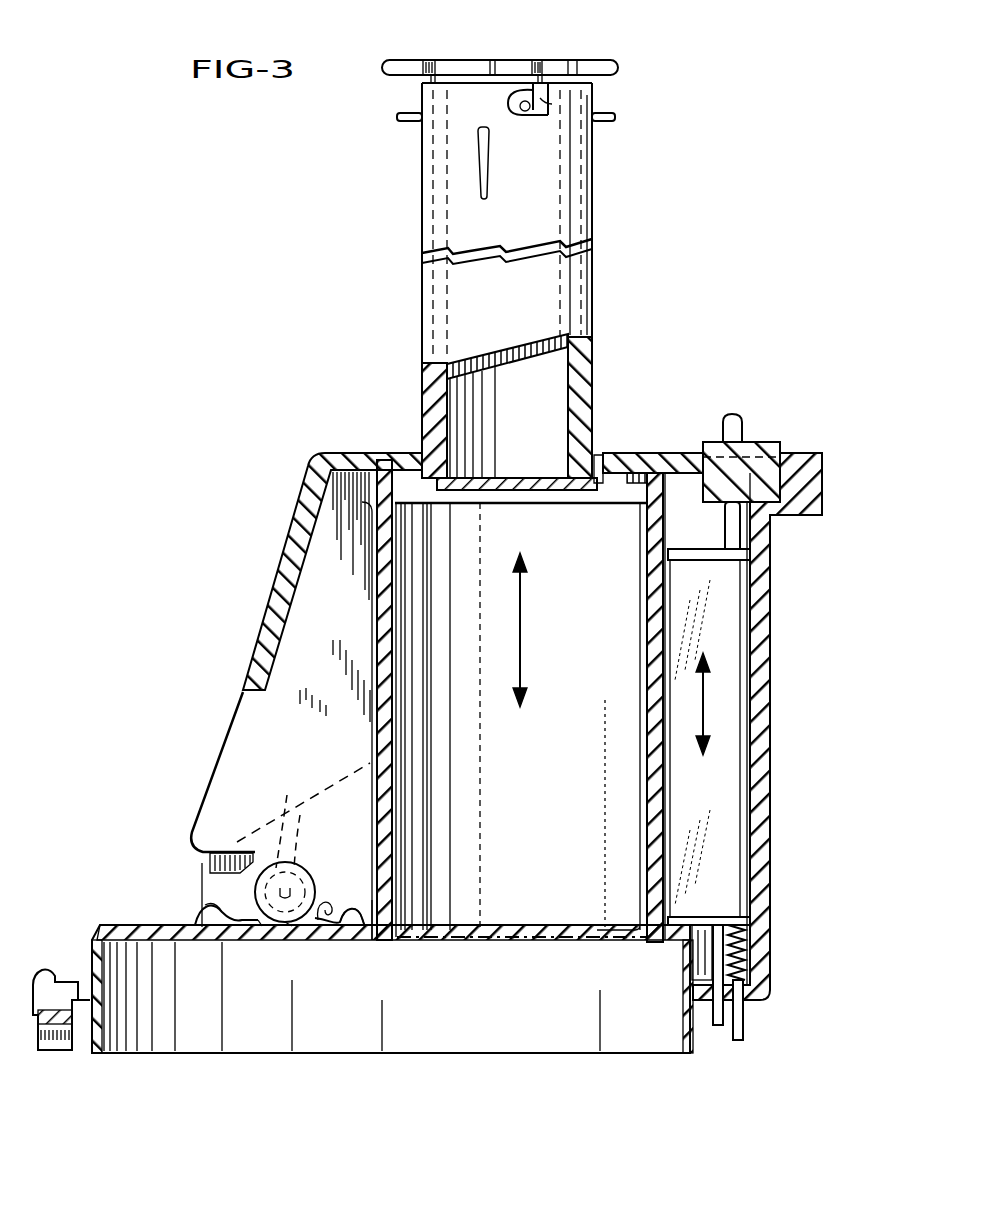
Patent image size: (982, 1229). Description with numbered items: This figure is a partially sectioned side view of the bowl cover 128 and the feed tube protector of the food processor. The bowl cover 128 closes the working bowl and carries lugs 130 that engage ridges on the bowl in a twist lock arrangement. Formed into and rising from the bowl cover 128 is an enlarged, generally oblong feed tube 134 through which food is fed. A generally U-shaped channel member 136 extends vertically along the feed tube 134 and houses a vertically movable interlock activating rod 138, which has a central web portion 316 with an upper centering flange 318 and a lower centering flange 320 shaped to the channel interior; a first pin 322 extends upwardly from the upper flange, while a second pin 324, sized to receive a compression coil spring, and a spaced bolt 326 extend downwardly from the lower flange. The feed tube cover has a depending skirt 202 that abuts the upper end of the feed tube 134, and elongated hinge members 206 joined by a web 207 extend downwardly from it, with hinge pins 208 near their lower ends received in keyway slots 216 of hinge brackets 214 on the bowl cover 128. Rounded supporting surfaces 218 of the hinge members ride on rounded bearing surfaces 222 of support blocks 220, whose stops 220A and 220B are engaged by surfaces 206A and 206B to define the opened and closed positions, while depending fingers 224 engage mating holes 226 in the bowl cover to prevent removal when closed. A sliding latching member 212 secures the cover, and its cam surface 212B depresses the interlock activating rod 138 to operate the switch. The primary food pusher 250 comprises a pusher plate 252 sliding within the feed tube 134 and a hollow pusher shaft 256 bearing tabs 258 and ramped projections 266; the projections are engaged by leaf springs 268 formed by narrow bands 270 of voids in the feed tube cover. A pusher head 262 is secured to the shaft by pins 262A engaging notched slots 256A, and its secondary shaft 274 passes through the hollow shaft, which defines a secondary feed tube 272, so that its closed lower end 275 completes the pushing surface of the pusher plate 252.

The bowl cover 128 is at (127, 925).
The lugs 130 is at (45, 975).
The feed tube 134 is at (547, 757).
The channel member 136 is at (769, 800).
The interlock activating rod 138 is at (754, 718).
The depending skirt 202 is at (373, 503).
The elongated hinge members 206 is at (240, 722).
The surface of hinge member 206A is at (232, 853).
The surface of hinge member 206B is at (322, 905).
The web 207 is at (296, 545).
The hinge pins 208 is at (290, 862).
The latching member 212 is at (753, 437).
The cam surface 212B is at (780, 520).
The hinge brackets 214 is at (208, 868).
The keyway slots 216 is at (287, 805).
The rounded supporting surfaces 218 is at (292, 943).
The feed tube cover support blocks 220 is at (221, 950).
The stop 220A is at (232, 907).
The stop 220B is at (372, 904).
The rounded bearing surfaces 222 is at (265, 942).
The depending fingers 224 is at (376, 945).
The mating holes 226 is at (372, 900).
The primary food pusher 250 is at (403, 282).
The pusher plate 252 is at (607, 505).
The pusher shaft 256 is at (595, 248).
The notched slots 256A is at (538, 118).
The tabs 258 is at (403, 122).
The pusher head 262 is at (597, 60).
The pins 262A is at (528, 115).
The ramped projections 266 is at (490, 178).
The leaf springs 268 is at (603, 452).
The narrow bands 270 is at (608, 462).
The secondary feed tube 272 is at (425, 403).
The secondary shaft 274 is at (594, 380).
The closed lower end 275 is at (496, 504).
The central web portion 316 is at (718, 784).
The upper centering flange 318 is at (713, 552).
The lower centering flange 320 is at (685, 917).
The first pin 322 is at (727, 548).
The second pin 324 is at (746, 1022).
The bolt 326 is at (722, 1025).